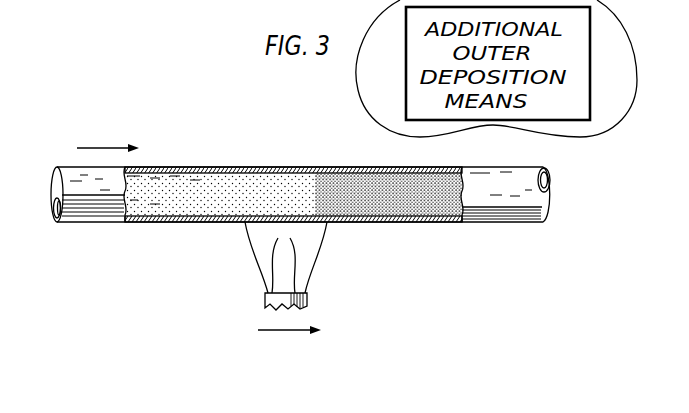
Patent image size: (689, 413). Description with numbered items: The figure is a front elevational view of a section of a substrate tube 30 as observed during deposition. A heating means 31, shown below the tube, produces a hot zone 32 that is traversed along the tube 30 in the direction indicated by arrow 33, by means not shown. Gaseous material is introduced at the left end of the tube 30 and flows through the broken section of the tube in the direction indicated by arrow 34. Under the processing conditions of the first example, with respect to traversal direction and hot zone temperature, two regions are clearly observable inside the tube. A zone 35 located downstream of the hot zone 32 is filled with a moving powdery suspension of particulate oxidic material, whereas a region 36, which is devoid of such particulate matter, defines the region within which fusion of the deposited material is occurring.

The substrate tube 30 is at (507, 186).
The heating means 31 is at (305, 240).
The hot zone 32 is at (268, 188).
The arrow 33 is at (287, 331).
The arrow 34 is at (104, 147).
The zone 35 is at (393, 190).
The region 36 is at (193, 198).